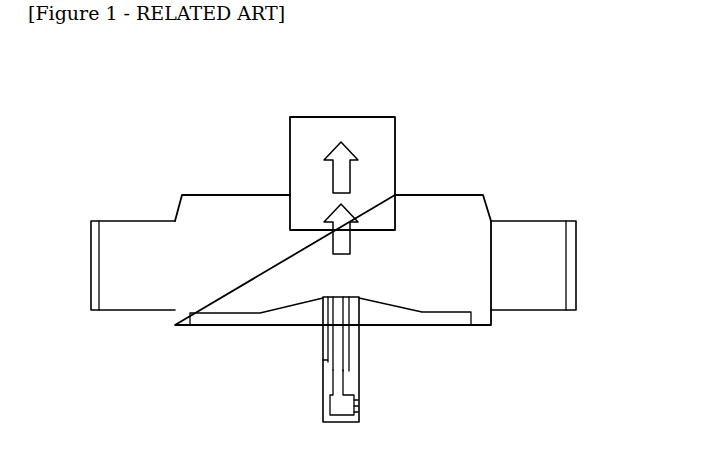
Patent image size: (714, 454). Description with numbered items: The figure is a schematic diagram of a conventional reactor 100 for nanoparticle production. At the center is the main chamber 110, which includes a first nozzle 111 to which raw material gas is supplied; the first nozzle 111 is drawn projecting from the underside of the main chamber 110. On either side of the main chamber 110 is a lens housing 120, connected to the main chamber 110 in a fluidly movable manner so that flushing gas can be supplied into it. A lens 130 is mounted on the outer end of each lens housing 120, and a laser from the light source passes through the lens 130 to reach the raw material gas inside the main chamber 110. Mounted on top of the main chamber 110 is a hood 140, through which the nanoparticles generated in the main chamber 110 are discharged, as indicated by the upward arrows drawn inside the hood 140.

The reactor 100 is at (78, 79).
The main chamber 110 is at (437, 176).
The first nozzle 111 is at (305, 366).
The lens housing 120 is at (125, 221).
The lens 130 is at (91, 267).
The hood 140 is at (290, 133).